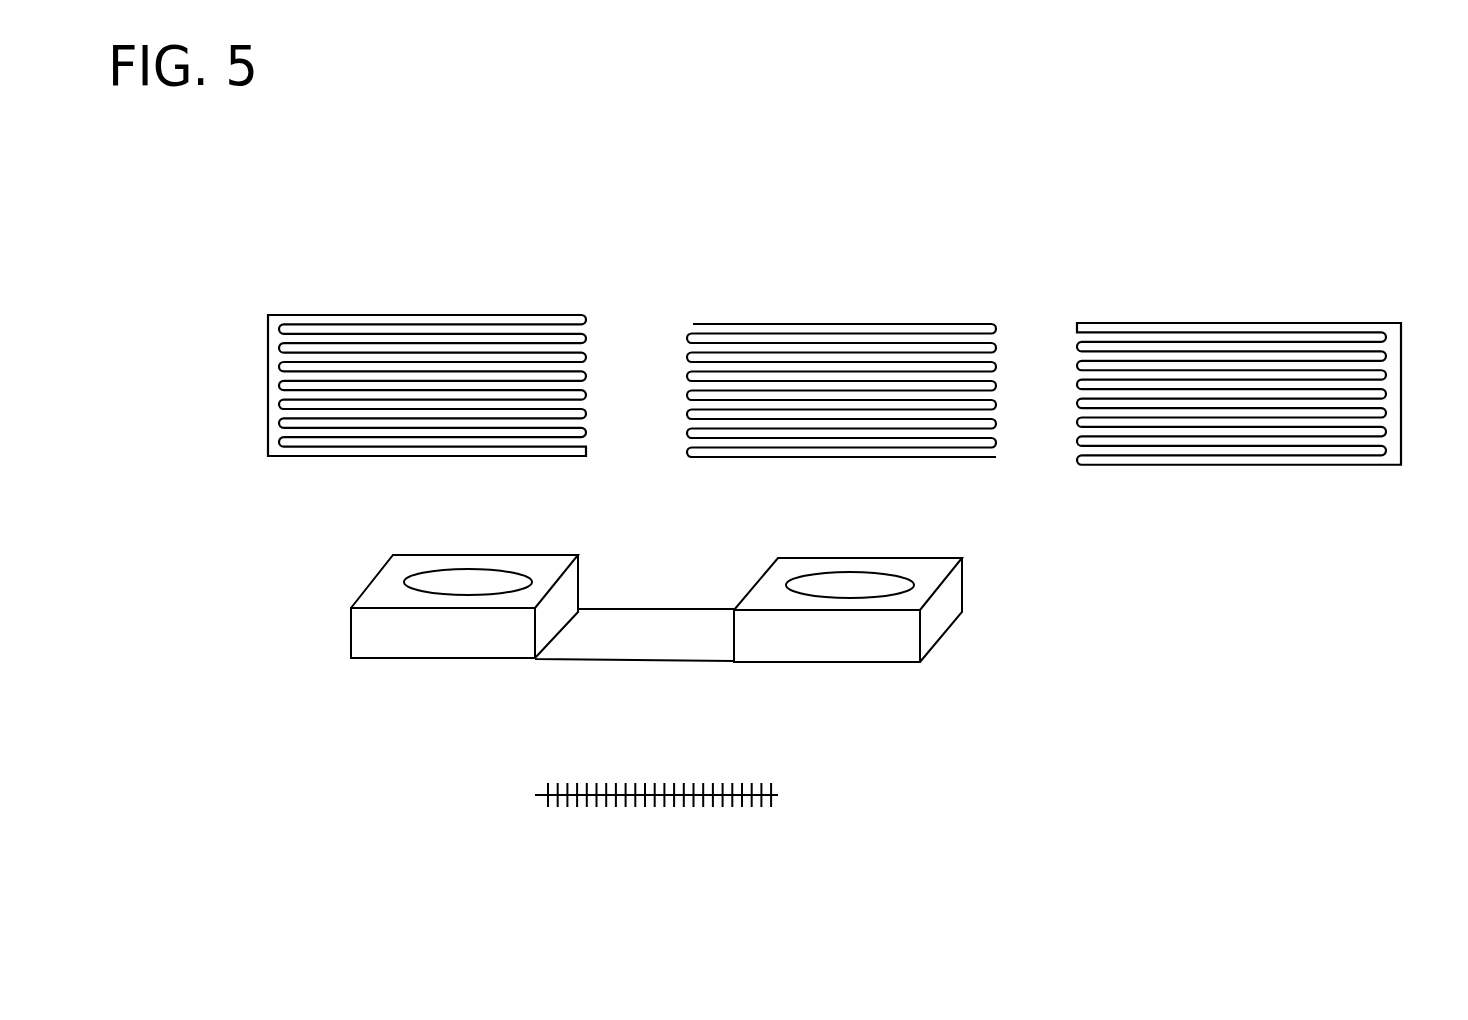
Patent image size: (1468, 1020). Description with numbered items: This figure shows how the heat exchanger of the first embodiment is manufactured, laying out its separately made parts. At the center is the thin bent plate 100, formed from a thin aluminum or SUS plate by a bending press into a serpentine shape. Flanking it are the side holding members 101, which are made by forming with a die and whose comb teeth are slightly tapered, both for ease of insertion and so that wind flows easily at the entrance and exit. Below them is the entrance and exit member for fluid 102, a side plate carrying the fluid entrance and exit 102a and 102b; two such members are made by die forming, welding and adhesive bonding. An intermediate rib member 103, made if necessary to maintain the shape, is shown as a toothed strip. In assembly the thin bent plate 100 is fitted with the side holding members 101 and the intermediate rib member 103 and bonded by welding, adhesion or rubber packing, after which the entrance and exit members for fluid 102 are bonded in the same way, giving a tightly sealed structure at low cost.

The thin bent plate 100 is at (858, 287).
The side holding member 101 is at (1242, 291).
The entrance and exit member for fluid 102 is at (845, 593).
The entrance and exit 102a is at (898, 585).
The entrance and exit 102b is at (437, 583).
The intermediate rib member 103 is at (500, 794).